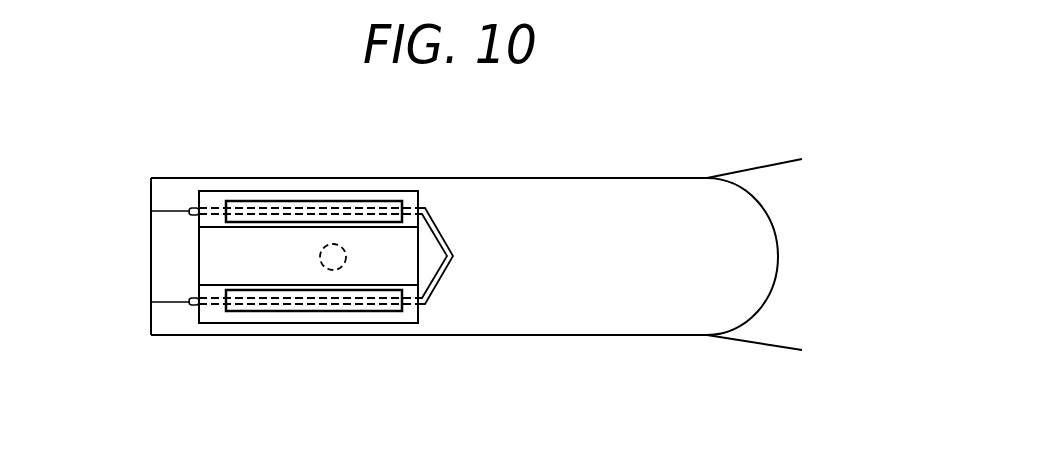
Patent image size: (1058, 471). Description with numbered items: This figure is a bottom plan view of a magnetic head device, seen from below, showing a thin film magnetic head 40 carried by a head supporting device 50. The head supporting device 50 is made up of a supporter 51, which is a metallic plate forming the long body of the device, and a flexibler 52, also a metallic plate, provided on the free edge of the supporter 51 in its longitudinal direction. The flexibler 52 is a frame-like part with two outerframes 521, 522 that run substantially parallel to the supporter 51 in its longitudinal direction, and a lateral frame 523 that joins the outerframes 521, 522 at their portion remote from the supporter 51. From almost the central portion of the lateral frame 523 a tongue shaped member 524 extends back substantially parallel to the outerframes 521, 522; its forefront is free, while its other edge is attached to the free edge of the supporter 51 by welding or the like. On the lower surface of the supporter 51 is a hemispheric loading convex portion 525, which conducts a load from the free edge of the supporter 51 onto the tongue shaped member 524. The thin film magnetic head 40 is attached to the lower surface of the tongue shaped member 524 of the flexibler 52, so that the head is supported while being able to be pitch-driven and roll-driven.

The thin film magnetic head 40 is at (273, 378).
The head supporting device 50 is at (613, 347).
The supporter 51 is at (763, 183).
The flexibler 52 is at (150, 325).
The outerframe 521 is at (187, 187).
The outerframe 522 is at (333, 330).
The lateral frame 523 is at (168, 276).
The tongue shaped member 524 is at (425, 273).
The loading convex portion 525 is at (335, 248).